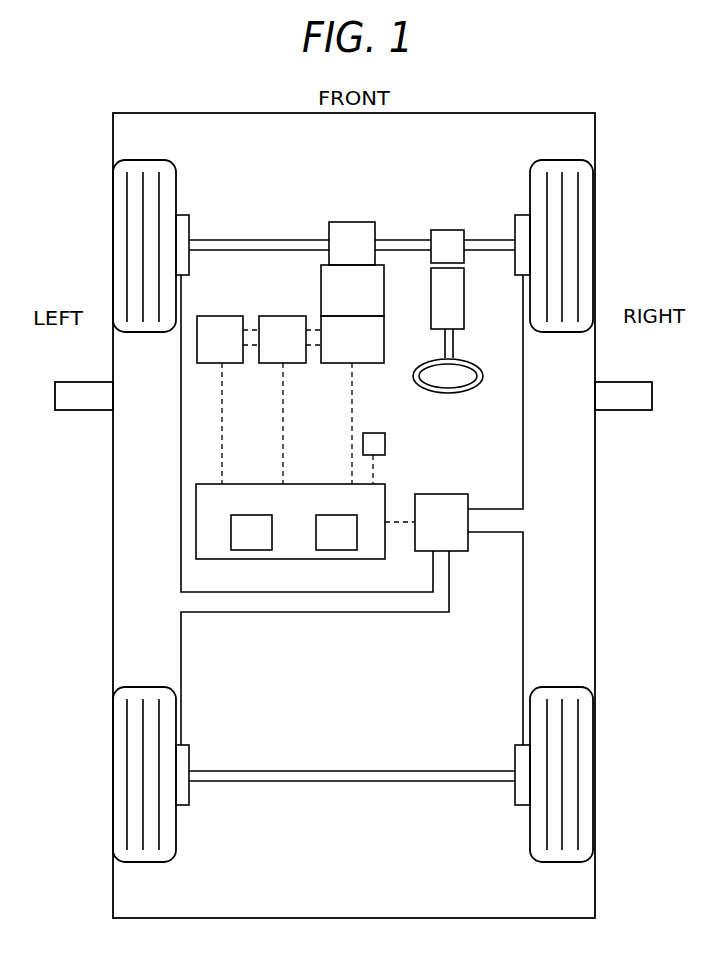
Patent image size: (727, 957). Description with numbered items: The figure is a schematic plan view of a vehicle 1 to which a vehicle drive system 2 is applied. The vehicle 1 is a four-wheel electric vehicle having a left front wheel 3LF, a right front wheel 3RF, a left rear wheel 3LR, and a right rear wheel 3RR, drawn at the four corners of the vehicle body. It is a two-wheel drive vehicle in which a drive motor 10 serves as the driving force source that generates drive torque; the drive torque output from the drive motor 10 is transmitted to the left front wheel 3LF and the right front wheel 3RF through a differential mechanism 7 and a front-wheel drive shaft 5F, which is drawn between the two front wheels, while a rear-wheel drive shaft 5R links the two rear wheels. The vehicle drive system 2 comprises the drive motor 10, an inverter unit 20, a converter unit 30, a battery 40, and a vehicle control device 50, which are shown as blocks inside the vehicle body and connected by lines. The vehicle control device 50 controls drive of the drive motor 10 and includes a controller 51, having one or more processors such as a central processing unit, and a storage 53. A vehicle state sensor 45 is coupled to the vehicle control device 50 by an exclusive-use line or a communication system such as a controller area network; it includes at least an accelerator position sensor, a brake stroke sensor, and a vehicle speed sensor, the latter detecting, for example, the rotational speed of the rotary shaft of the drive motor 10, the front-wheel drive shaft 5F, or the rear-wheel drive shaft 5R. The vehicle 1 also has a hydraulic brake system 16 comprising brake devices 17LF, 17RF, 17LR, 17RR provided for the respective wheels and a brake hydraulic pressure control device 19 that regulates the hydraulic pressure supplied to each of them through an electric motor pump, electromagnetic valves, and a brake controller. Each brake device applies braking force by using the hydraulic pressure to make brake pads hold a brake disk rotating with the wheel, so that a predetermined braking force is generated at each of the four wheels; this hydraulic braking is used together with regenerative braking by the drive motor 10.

The vehicle 1 is at (599, 108).
The vehicle drive system 2 is at (280, 312).
The left front wheel 3LF is at (113, 215).
The right front wheel 3RF is at (588, 213).
The left rear wheel 3LR is at (113, 795).
The right rear wheel 3RR is at (588, 790).
The front-wheel drive shaft 5F is at (218, 250).
The rear-wheel drive shaft 5R is at (265, 771).
The differential mechanism 7 is at (352, 243).
The drive motor 10 is at (352, 290).
The hydraulic brake system 16 is at (455, 486).
The brake device 17LF is at (192, 223).
The brake device 17RF is at (513, 224).
The brake device 17LR is at (191, 805).
The brake device 17RR is at (513, 805).
The brake hydraulic pressure control device 19 is at (426, 522).
The inverter unit 20 is at (352, 339).
The converter unit 30 is at (290, 339).
The battery 40 is at (228, 339).
The vehicle state sensor 45 is at (372, 433).
The vehicle control device 50 is at (290, 521).
The controller 51 is at (251, 532).
The storage 53 is at (336, 532).